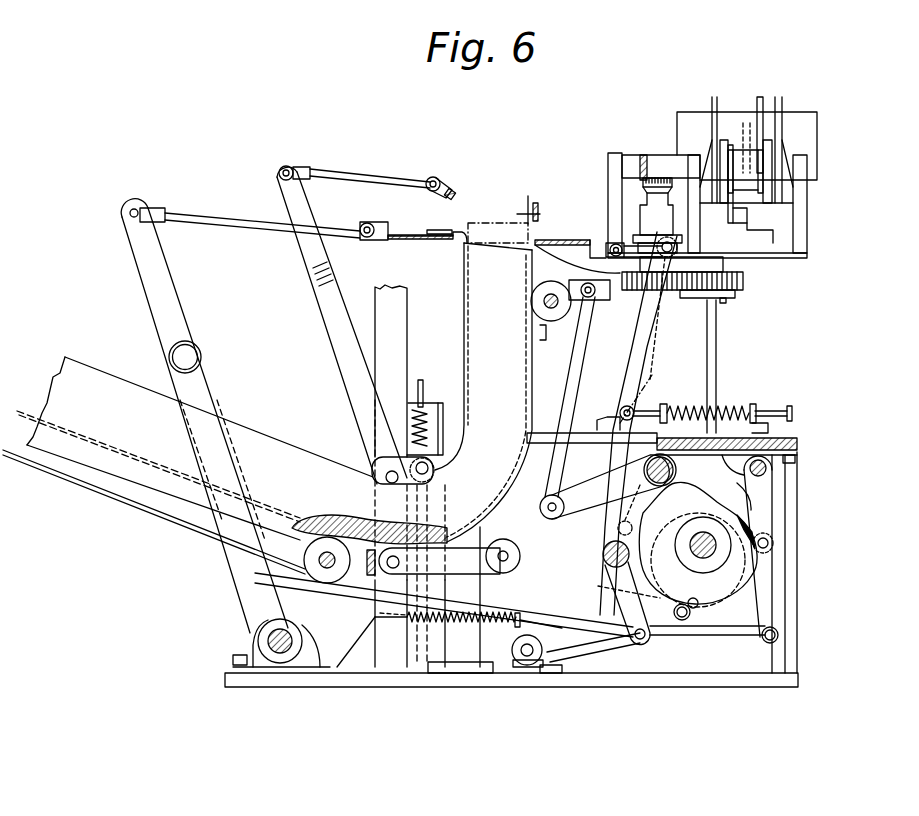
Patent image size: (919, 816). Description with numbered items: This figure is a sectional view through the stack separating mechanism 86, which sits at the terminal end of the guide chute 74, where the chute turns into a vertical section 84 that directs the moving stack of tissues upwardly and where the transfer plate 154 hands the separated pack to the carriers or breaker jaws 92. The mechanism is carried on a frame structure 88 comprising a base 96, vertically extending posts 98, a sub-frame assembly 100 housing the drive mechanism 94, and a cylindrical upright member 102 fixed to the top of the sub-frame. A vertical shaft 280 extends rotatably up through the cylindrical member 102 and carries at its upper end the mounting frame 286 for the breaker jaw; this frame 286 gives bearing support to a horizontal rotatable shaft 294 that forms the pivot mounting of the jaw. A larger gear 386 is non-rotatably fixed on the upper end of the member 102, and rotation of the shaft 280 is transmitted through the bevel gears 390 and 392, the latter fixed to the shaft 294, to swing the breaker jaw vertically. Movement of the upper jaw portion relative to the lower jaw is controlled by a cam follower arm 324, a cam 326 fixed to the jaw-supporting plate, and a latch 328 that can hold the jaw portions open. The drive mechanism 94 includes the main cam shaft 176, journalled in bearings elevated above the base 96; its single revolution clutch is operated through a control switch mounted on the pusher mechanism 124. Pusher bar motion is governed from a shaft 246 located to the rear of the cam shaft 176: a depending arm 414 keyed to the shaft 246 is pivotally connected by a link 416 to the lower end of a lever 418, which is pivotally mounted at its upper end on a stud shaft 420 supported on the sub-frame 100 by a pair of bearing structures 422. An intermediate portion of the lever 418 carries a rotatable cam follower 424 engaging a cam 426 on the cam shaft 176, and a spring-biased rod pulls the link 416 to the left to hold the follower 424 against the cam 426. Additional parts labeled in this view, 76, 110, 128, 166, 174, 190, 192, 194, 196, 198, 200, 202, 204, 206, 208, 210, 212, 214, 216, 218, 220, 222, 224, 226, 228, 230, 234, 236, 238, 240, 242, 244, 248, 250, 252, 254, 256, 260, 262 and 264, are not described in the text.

The guide chute 74 is at (104, 374).
The conveyor rails 76 is at (140, 504).
The vertical section 84 is at (463, 297).
The stack separating mechanism 86 is at (536, 152).
The frame structure 88 is at (352, 676).
The breaker jaws 92 is at (808, 98).
The drive mechanism 94 is at (720, 612).
The base 96 is at (800, 678).
The vertically extending posts 98 is at (403, 335).
The sub-frame assembly 100 is at (801, 650).
The cylindrical upright member 102 is at (726, 355).
The pulley bracket 110 is at (574, 310).
The pusher mechanism 124 is at (542, 206).
The pad 128 is at (456, 188).
The transfer plate 154 is at (405, 228).
The hatched plate 166 is at (566, 236).
The guide arc 174 is at (582, 267).
The main cam shaft 176 is at (716, 552).
The pivot 190 is at (778, 635).
The link 192 is at (372, 178).
The pivot link 194 is at (440, 180).
The arm 196 is at (320, 294).
The block 198 is at (370, 478).
The support 200 is at (432, 645).
The pad 202 is at (425, 499).
The roller 204 is at (525, 665).
The bracket 206 is at (555, 673).
The lever 208 is at (606, 644).
The rotation direction 210 is at (745, 598).
The spring 212 is at (398, 410).
The bracket 214 is at (430, 402).
The cam follower 216 is at (742, 502).
The link rod 218 is at (222, 220).
The arm 220 is at (206, 376).
The shaft 222 is at (293, 642).
The bearing pedestal 224 is at (256, 634).
The roller 226 is at (342, 588).
The link 228 is at (612, 590).
The pivot shaft 230 is at (648, 468).
The link 234 is at (616, 529).
The spring 236 is at (457, 620).
The rod 238 is at (393, 618).
The cam 240 is at (733, 598).
The block 242 is at (650, 240).
The link bar 244 is at (634, 349).
The shaft 246 is at (603, 553).
The pivot 248 is at (688, 618).
The bracket 250 is at (650, 390).
The rod 252 is at (782, 407).
The collar 254 is at (752, 403).
The spring 256 is at (664, 403).
The link 260 is at (568, 402).
The link 262 is at (576, 492).
The lever 264 is at (610, 487).
The vertical shaft 280 is at (700, 492).
The mounting frame 286 is at (810, 238).
The rotatable shaft 294 is at (608, 168).
The cam follower arm 324 is at (730, 215).
The cam 326 is at (750, 225).
The latch 328 is at (760, 97).
The larger gear 386 is at (740, 290).
The bevel gear 390 is at (658, 177).
The bevel gear 392 is at (641, 154).
The depending arm 414 is at (605, 568).
The link 416 is at (700, 637).
The lever 418 is at (772, 500).
The stud shaft 420 is at (776, 468).
The bearing structures 422 is at (780, 478).
The cam follower 424 is at (770, 546).
The cam 426 is at (770, 532).